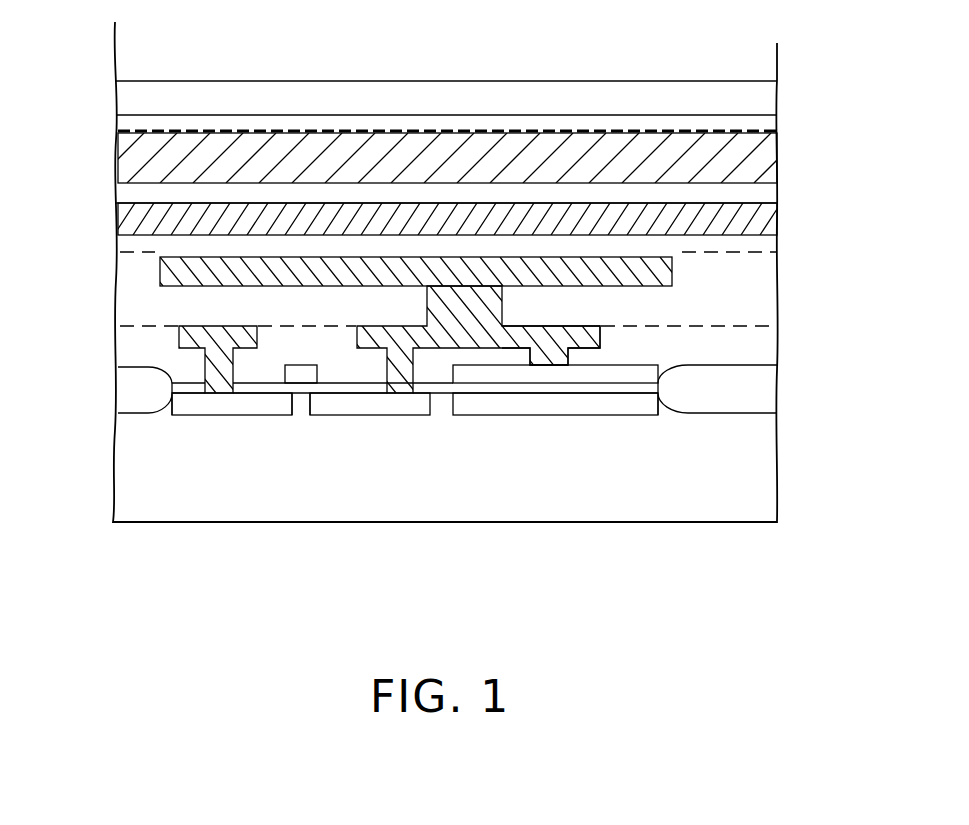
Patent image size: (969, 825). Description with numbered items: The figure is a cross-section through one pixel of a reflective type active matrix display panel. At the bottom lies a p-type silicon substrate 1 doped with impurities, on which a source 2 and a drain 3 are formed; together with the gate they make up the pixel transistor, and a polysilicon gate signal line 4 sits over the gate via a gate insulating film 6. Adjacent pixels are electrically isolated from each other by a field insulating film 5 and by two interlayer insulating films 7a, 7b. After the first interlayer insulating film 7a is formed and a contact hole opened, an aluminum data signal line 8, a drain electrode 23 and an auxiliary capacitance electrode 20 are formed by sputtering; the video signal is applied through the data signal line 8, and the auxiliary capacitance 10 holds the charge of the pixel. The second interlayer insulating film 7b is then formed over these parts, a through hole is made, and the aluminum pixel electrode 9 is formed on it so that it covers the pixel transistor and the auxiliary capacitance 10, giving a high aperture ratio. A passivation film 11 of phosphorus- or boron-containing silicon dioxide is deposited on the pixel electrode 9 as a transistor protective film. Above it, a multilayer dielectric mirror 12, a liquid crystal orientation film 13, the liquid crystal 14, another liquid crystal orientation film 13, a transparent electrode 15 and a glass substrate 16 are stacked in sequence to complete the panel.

The p-type silicon substrate 1 is at (433, 507).
The source 2 is at (215, 407).
The drain 3 is at (373, 405).
The gate signal line 4 is at (302, 365).
The field insulating film 5 is at (726, 372).
The gate insulating film 6 is at (300, 392).
The interlayer insulating film 7a is at (118, 352).
The interlayer insulating film 7b is at (117, 295).
The data signal line 8 is at (179, 340).
The pixel electrode 9 is at (672, 272).
The auxiliary capacitance 10 is at (650, 366).
The passivation film 11 is at (765, 243).
The dielectric mirror 12 is at (765, 218).
The liquid crystal orientation film 13 is at (765, 120).
The liquid crystal 14 is at (765, 160).
The transparent electrode 15 is at (762, 95).
The glass substrate 16 is at (767, 58).
The auxiliary capacitance electrode 20 is at (580, 326).
The drain electrode 23 is at (392, 326).